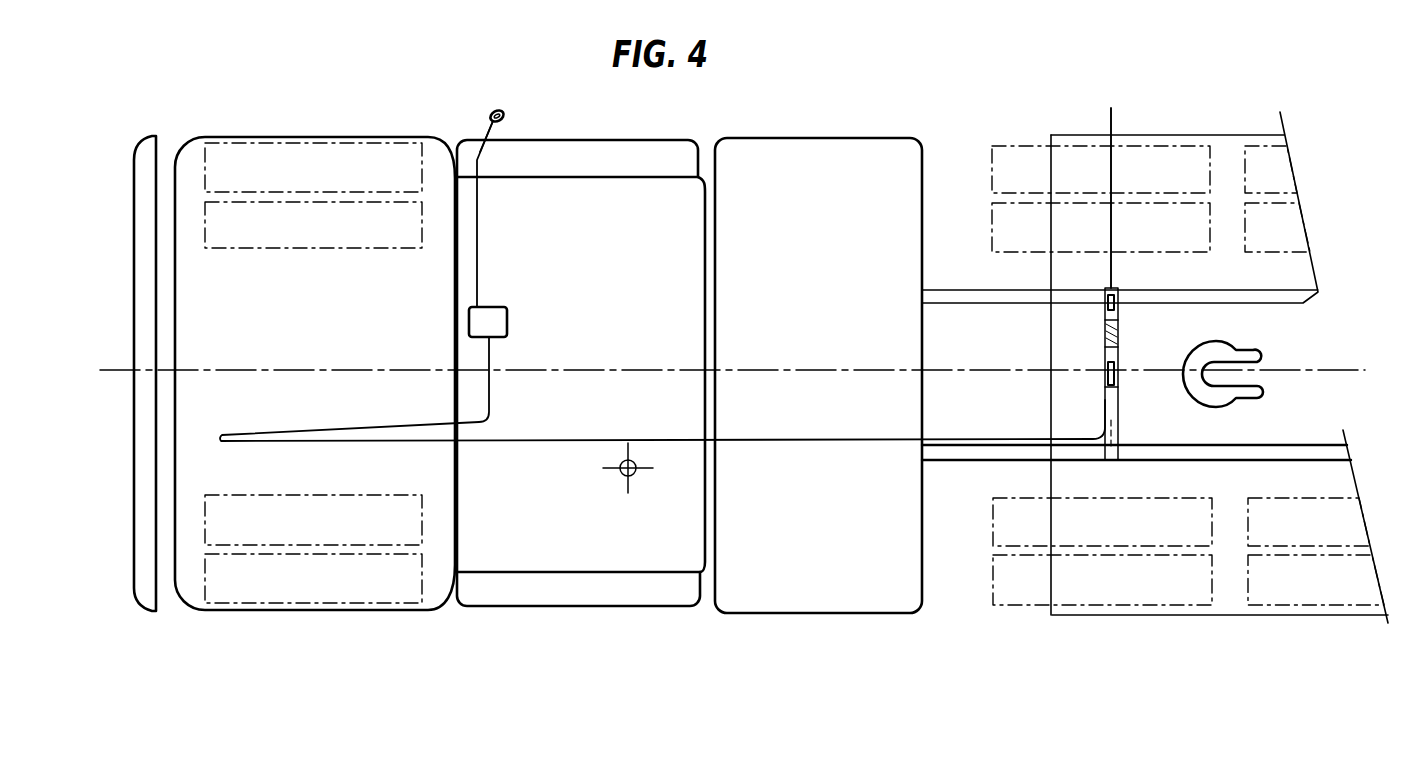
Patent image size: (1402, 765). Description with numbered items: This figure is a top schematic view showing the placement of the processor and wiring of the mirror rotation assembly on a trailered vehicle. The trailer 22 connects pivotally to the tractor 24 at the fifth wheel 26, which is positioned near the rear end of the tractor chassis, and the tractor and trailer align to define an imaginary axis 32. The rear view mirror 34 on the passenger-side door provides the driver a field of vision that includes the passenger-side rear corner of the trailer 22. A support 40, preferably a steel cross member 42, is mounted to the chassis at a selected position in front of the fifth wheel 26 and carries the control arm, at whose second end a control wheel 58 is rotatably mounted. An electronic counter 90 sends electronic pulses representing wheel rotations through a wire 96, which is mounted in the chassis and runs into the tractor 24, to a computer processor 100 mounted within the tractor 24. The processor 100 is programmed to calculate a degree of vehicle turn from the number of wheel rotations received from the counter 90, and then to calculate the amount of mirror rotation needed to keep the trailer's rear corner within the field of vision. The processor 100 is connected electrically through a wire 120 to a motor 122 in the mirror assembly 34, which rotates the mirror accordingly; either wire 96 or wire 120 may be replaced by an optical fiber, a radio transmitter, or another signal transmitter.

The trailer 22 is at (1203, 450).
The tractor 24 is at (638, 542).
The fifth wheel 26 is at (1222, 395).
The imaginary axis 32 is at (112, 368).
The rear view mirror 34 is at (505, 110).
The support 40 is at (1105, 340).
The cross member 42 is at (1107, 290).
The control wheel 58 is at (1120, 375).
The electronic counter 90 is at (1121, 293).
The wire 96 is at (429, 427).
The computer processor 100 is at (492, 306).
The wire 120 is at (473, 257).
The motor 122 is at (488, 113).